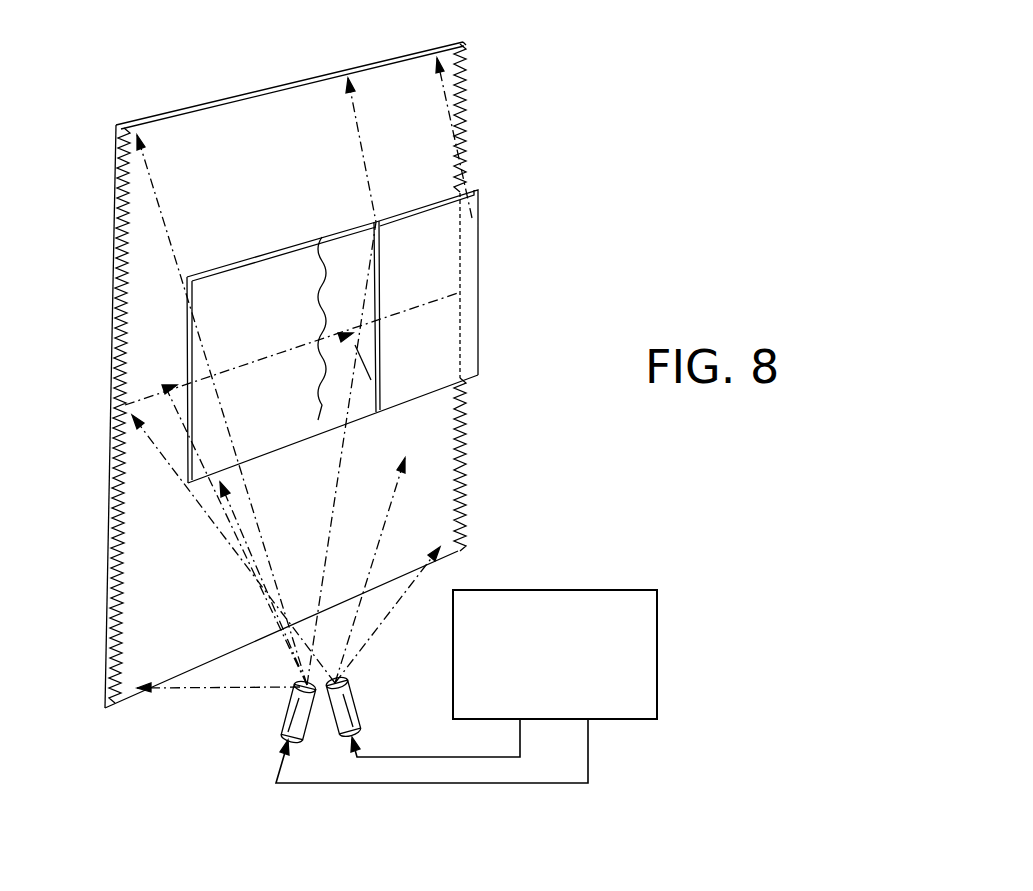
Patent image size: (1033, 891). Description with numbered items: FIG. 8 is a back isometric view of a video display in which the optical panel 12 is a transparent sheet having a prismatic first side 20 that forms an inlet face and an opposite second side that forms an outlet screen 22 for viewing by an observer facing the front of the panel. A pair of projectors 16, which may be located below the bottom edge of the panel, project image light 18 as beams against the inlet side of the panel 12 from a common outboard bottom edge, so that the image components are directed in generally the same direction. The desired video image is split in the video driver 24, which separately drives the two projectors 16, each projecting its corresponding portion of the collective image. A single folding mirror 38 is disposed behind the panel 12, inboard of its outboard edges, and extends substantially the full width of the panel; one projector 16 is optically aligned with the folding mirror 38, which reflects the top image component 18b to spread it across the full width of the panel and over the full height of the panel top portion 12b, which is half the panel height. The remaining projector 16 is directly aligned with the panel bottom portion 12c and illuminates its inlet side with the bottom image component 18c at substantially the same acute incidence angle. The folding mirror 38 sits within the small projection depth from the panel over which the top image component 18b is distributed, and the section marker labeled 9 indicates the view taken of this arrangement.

The section line 9- 9 is at (84, 760).
The optical panel 12 is at (106, 314).
The panel top portion 12b is at (305, 164).
The panel bottom portion 12c is at (315, 489).
The projectors 16 is at (286, 711).
The image light 18 is at (243, 536).
The top image component 18b is at (168, 224).
The bottom image component 18c is at (200, 511).
The prismatic first side 20 is at (122, 606).
The outlet screen 22 is at (108, 512).
The video driver 24 is at (590, 590).
The folding mirror 38 is at (478, 258).